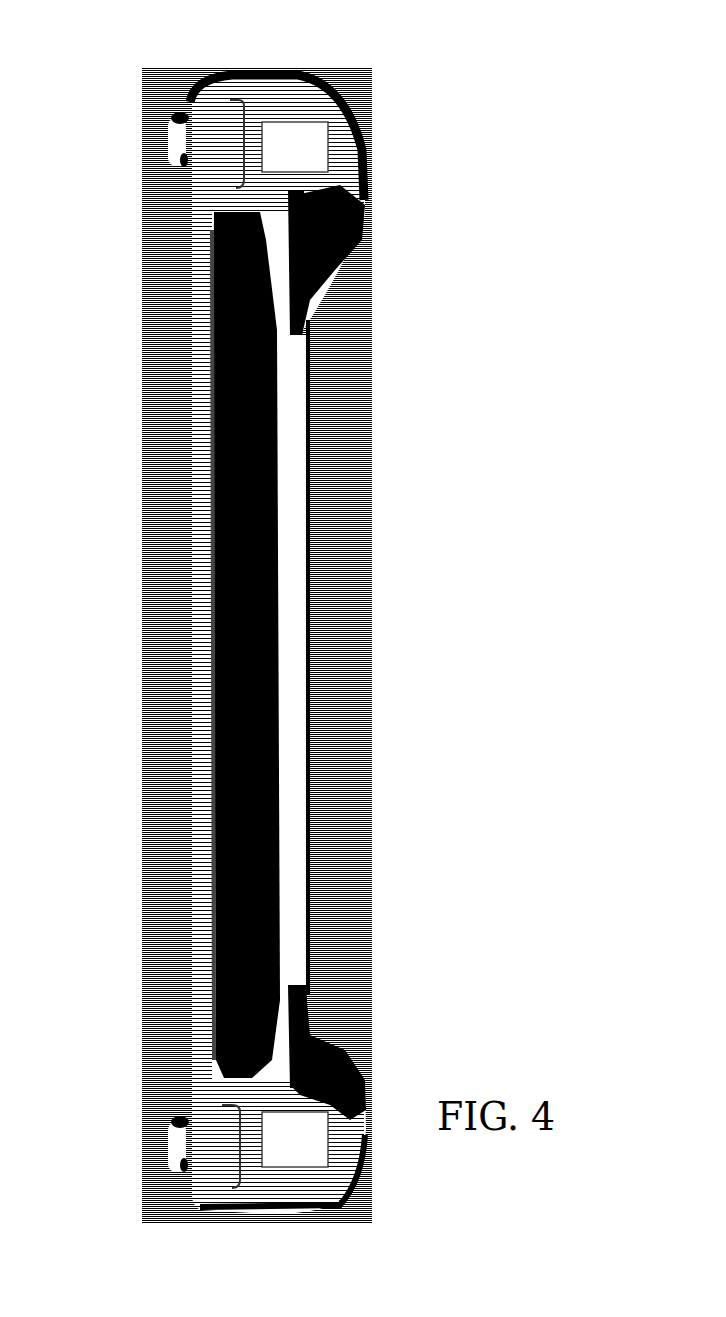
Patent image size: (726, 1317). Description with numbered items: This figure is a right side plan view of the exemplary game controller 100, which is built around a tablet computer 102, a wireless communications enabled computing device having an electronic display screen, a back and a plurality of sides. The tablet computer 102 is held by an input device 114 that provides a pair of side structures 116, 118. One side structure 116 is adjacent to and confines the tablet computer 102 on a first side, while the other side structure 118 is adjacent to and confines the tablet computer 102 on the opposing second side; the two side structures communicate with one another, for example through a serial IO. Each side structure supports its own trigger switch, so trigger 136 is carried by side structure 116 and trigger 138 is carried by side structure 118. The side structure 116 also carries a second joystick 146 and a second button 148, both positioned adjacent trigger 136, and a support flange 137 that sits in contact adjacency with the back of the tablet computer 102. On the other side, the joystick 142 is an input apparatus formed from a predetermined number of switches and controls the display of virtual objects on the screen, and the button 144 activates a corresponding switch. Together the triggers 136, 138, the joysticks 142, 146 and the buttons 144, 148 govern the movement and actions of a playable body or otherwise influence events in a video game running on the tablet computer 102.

The game controller 100 is at (425, 80).
The tablet computer 102 is at (182, 557).
The input device 114 is at (314, 602).
The side structure 116 is at (360, 242).
The side structure 118 is at (358, 1127).
The trigger switch 136 is at (285, 133).
The support flange 137 is at (307, 325).
The trigger switch 138 is at (298, 1153).
The joystick 142 is at (156, 1143).
The button 144 is at (220, 1180).
The second joystick 146 is at (156, 140).
The second button 148 is at (205, 78).